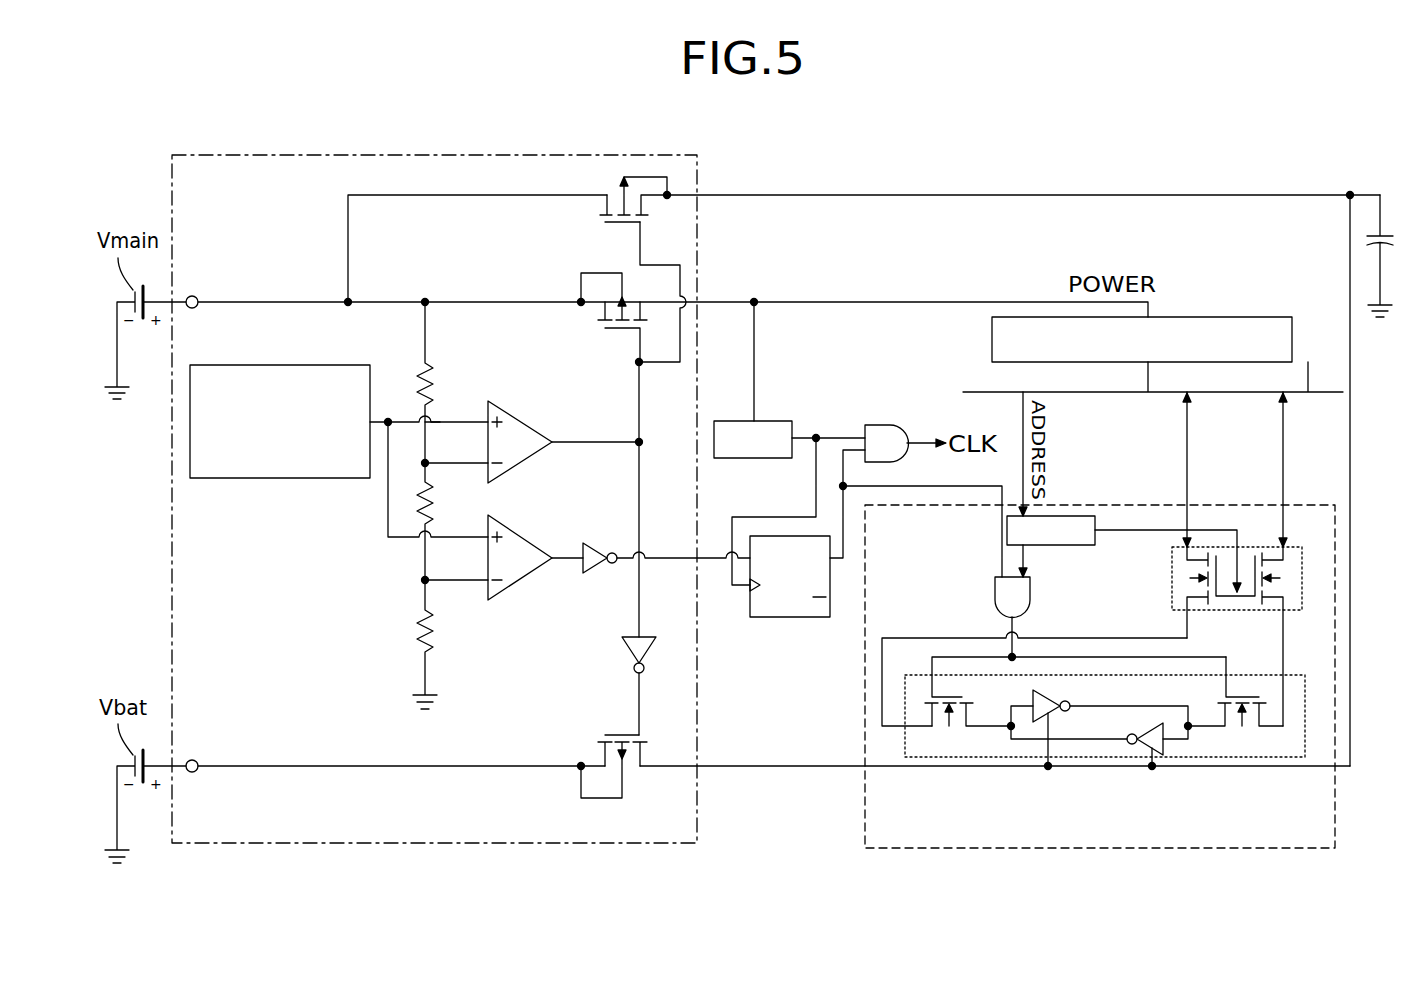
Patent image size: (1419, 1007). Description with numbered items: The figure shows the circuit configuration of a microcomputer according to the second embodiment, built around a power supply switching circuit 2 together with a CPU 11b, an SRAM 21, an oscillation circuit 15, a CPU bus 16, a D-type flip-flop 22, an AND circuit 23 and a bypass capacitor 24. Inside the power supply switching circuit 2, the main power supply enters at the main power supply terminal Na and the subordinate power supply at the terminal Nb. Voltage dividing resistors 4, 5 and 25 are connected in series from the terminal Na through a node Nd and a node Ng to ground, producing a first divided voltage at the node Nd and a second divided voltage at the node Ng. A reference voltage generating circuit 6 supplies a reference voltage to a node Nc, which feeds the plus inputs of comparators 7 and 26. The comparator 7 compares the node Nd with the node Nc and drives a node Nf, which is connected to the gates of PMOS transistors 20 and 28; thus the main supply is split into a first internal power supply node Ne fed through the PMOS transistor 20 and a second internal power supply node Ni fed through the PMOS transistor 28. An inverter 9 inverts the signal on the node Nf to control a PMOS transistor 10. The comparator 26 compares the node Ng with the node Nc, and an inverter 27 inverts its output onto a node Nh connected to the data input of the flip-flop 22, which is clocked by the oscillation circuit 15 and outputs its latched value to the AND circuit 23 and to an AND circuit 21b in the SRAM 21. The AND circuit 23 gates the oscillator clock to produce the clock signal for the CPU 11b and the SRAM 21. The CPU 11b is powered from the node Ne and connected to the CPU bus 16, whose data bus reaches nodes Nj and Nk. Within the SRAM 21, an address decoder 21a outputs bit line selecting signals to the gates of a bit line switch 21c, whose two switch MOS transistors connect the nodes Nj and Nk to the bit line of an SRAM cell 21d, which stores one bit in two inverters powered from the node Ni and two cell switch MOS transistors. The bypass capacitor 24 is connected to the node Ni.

The power supply switching circuit 2 is at (697, 174).
The voltage dividing resistor 4 is at (433, 382).
The voltage dividing resistor 5 is at (416, 500).
The reference voltage generating circuit 6 is at (280, 478).
The comparator 7 is at (528, 462).
The inverter 9 is at (625, 652).
The PMOS transistor 10 is at (595, 752).
The CPU 11b is at (1228, 316).
The oscillation circuit 15 is at (785, 421).
The CPU bus 16 is at (1325, 392).
The PMOS transistor 20 is at (605, 328).
The SRAM 21 is at (865, 822).
The address decoder 21a is at (1068, 545).
The AND circuit 21b is at (995, 599).
The bit line switch 21c is at (1170, 578).
The SRAM cell 21d is at (905, 738).
The D-type flip-flop 22 is at (780, 617).
The AND circuit 23 is at (888, 424).
The bypass capacitor 24 is at (1393, 236).
The voltage dividing resistor 25 is at (415, 631).
The comparator 26 is at (530, 577).
The inverter 27 is at (600, 545).
The PMOS transistor 28 is at (605, 221).
The main power supply terminal Na is at (192, 296).
The subordinate power supply terminal Nb is at (193, 759).
The node Nc is at (460, 420).
The node Nd is at (458, 466).
The first internal power supply node Ne is at (808, 302).
The node Nf is at (592, 438).
The node Ng is at (458, 585).
The node Nh is at (718, 556).
The second internal power supply node Ni is at (842, 195).
The node Nj is at (1189, 444).
The node Nk is at (1285, 444).